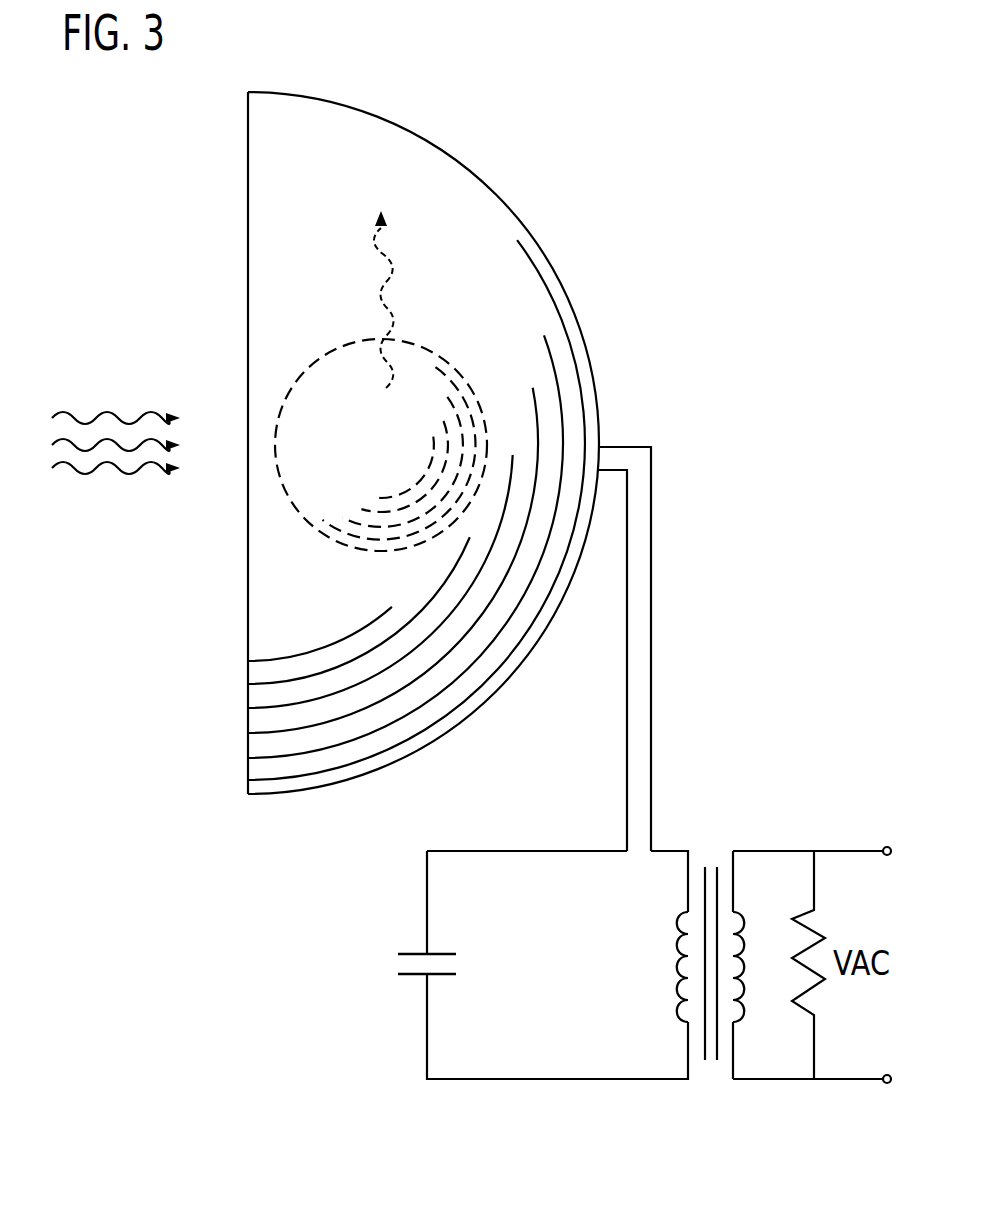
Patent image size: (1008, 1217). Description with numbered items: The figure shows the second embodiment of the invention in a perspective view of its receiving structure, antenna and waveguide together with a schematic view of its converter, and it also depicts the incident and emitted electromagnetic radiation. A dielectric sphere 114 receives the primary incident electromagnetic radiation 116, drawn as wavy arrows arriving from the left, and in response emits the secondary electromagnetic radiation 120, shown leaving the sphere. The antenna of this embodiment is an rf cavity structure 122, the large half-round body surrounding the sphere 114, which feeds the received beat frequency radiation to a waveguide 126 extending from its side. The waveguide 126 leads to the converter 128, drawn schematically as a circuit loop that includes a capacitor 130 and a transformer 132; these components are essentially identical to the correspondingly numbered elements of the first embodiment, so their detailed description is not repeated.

The sphere 114 is at (475, 390).
The primary incident electromagnetic radiation 116 is at (118, 415).
The secondary electromagnetic radiation 120 is at (378, 254).
The rf cavity structure 122 is at (598, 400).
The waveguide 126 is at (653, 568).
The converter 128 is at (570, 1100).
The capacitor 130 is at (413, 988).
The transformer 132 is at (709, 1091).